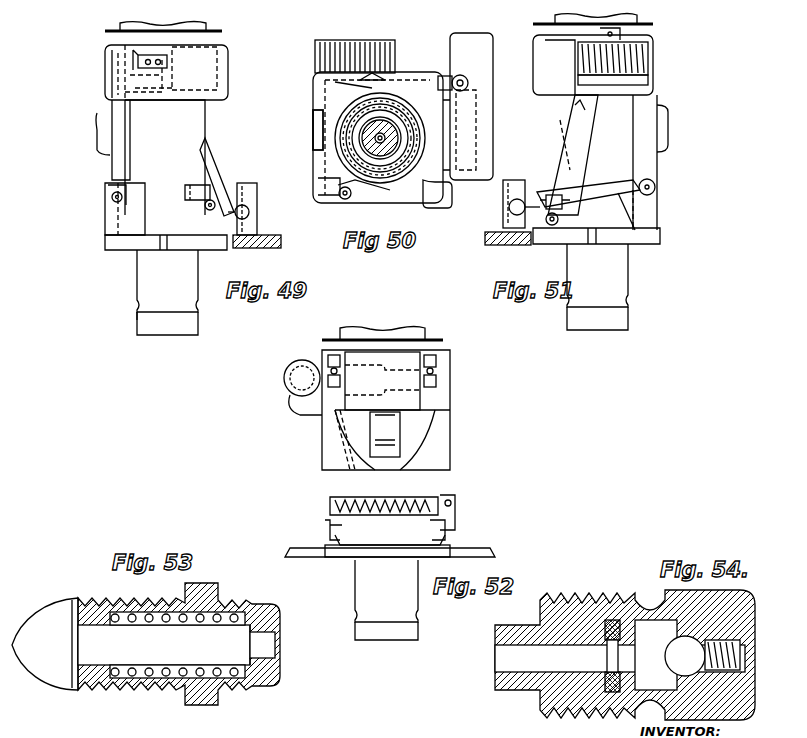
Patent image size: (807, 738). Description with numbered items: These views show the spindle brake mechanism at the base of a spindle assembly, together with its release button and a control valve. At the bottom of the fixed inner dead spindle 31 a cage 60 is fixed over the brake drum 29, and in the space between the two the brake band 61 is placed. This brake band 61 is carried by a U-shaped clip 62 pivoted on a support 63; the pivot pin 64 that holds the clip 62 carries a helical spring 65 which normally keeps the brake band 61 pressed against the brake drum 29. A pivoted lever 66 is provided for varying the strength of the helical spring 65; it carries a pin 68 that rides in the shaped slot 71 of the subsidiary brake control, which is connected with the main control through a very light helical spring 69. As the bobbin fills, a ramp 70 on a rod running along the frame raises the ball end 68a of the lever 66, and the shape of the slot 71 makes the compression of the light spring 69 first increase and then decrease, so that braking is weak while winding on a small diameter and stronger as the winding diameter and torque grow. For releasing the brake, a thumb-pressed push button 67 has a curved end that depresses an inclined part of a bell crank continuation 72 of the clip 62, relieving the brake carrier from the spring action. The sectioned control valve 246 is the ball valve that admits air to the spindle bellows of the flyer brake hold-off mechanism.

In FIG. 49, the brake drum 29 is at (203, 35).
In FIG. 51, the brake drum 29 is at (625, 33).
In FIG. 52, the brake drum 29 is at (405, 343).
In FIG. 49, the fixed inner dead spindle 31 is at (157, 268).
In FIG. 50, the fixed inner dead spindle 31 is at (362, 132).
In FIG. 51, the fixed inner dead spindle 31 is at (615, 272).
In FIG. 52, the fixed inner dead spindle 31 is at (375, 573).
In FIG. 49, the cage 60 is at (210, 92).
In FIG. 50, the cage 60 is at (441, 137).
In FIG. 51, the cage 60 is at (482, 118).
In FIG. 49, the brake band 61 is at (167, 62).
In FIG. 50, the brake band 61 is at (380, 76).
In FIG. 52, the brake band 61 is at (425, 356).
In FIG. 49, the clip 62 is at (118, 152).
In FIG. 50, the clip 62 is at (320, 118).
In FIG. 51, the clip 62 is at (652, 150).
In FIG. 52, the clip 62 is at (435, 436).
In FIG. 51, the support 63 is at (650, 212).
In FIG. 52, the support 63 is at (440, 546).
In FIG. 49, the pivot pin 64 is at (112, 196).
In FIG. 50, the pivot pin 64 is at (342, 200).
In FIG. 51, the pivot pin 64 is at (652, 183).
In FIG. 52, the pivot pin 64 is at (452, 505).
In FIG. 50, the helical spring 65 is at (343, 193).
In FIG. 52, the helical spring 65 is at (405, 497).
In FIG. 50, the lever 66 is at (455, 98).
In FIG. 51, the lever 66 is at (635, 200).
In FIG. 53, the thumb pressed piece 67 is at (47, 612).
In FIG. 49, the pin 68 is at (113, 220).
In FIG. 51, the pin 68 is at (557, 200).
In FIG. 49, the ball end 68a is at (250, 212).
In FIG. 50, the ball end 68a is at (456, 78).
In FIG. 51, the ball end 68a is at (509, 207).
In FIG. 50, the light helical spring 69 is at (356, 48).
In FIG. 51, the light helical spring 69 is at (648, 55).
In FIG. 49, the ramp 70 is at (250, 192).
In FIG. 50, the ramp 70 is at (461, 76).
In FIG. 51, the ramp 70 is at (512, 180).
In FIG. 52, the ramp 70 is at (432, 530).
In FIG. 49, the slot 71 is at (205, 186).
In FIG. 51, the slot 71 is at (553, 170).
In FIG. 49, the bell crank continuation 72 is at (214, 196).
In FIG. 50, the bell crank continuation 72 is at (420, 198).
In FIG. 54, the valve body 246 is at (560, 612).